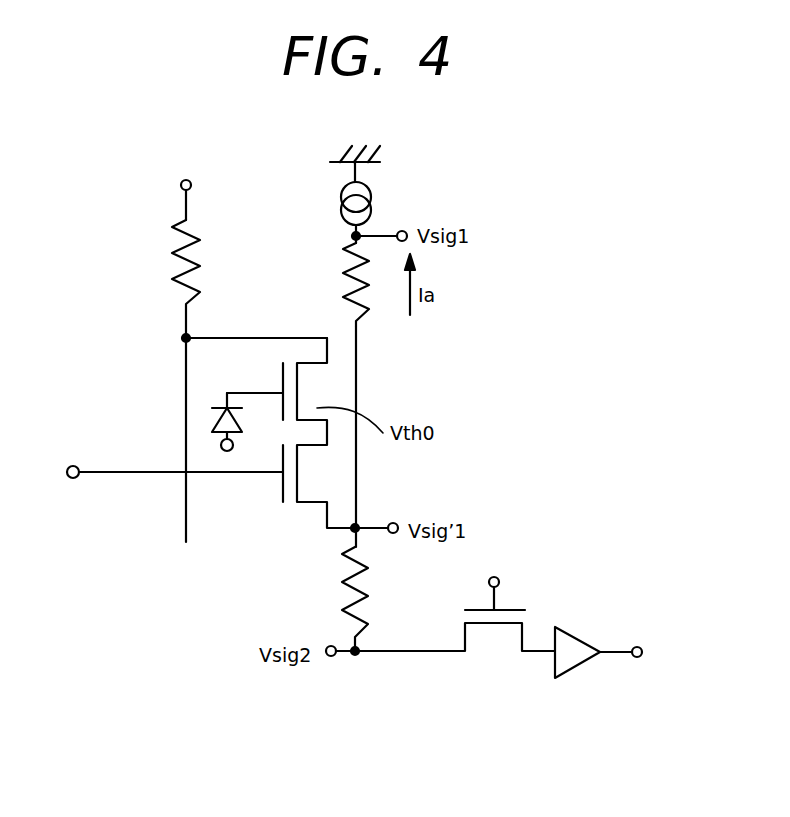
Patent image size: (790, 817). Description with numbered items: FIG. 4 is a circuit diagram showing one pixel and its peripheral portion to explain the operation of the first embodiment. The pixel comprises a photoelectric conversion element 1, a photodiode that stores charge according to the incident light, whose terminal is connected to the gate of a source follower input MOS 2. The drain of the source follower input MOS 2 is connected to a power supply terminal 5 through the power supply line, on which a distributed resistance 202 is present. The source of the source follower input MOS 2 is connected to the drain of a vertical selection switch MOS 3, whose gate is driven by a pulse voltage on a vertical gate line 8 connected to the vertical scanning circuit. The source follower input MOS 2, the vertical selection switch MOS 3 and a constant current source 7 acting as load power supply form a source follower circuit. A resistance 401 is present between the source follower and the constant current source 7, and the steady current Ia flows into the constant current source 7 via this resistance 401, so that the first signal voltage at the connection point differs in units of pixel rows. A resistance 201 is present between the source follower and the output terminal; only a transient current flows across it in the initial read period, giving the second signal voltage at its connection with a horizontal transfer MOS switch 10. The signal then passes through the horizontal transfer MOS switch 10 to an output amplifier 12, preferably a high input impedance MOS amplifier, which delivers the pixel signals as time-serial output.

The photoelectric conversion element 1 is at (221, 408).
The source follower input MOS 2 is at (308, 392).
The vertical selection switch MOS 3 is at (308, 475).
The power supply terminal 5 is at (182, 182).
The constant current source 7 is at (372, 195).
The vertical gate line 8 is at (130, 473).
The horizontal transfer MOS switch 10 is at (498, 640).
The output amplifier 12 is at (572, 670).
The resistance 201 is at (350, 599).
The resistance 202 is at (185, 257).
The resistance 401 is at (362, 303).